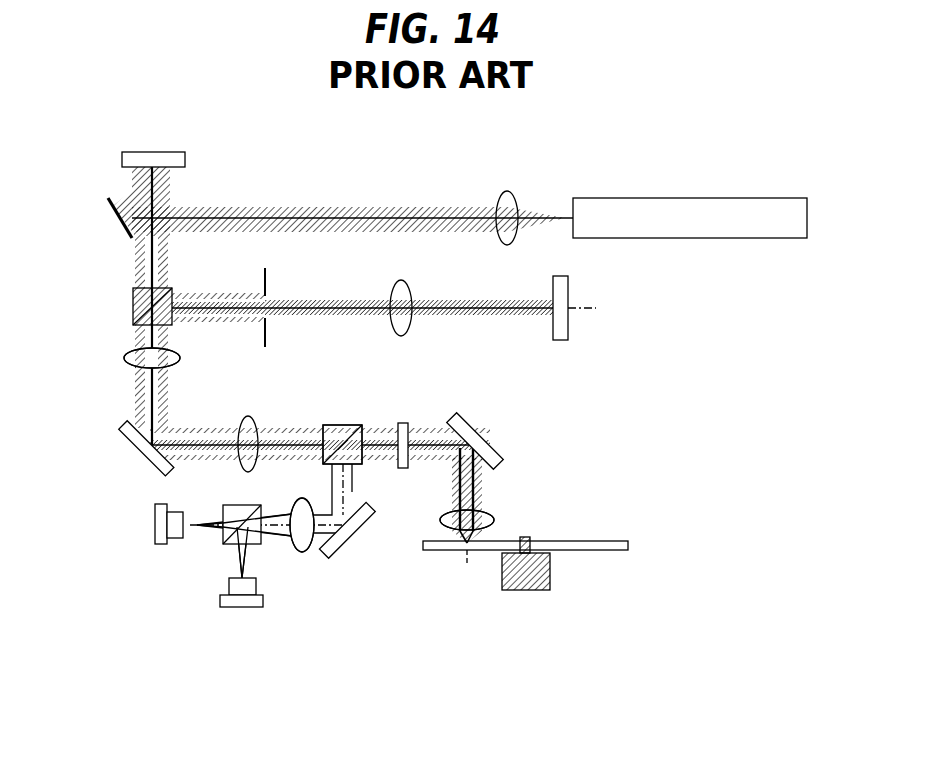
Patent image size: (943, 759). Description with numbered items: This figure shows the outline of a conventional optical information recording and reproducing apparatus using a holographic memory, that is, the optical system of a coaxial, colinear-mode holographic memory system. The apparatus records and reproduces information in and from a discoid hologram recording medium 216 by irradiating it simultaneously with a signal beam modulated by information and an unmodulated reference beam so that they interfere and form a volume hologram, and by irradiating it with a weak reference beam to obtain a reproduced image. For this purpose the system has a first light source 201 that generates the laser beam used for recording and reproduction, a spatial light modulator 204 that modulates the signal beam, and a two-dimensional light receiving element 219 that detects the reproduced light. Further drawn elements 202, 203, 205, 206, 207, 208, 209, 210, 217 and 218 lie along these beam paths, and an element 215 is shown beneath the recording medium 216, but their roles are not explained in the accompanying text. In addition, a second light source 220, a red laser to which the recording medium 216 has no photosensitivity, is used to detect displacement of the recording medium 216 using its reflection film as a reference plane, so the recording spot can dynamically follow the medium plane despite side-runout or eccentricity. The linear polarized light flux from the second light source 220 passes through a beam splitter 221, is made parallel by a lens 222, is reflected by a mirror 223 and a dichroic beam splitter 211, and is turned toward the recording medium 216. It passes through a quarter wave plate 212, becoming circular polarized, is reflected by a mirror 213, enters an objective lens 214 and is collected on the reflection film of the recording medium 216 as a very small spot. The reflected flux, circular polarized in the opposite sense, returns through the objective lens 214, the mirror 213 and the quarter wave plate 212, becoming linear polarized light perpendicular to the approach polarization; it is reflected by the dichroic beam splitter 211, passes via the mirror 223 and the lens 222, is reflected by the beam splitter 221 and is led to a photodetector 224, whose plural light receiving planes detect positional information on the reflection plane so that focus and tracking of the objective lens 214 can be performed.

The first light source 201 is at (743, 198).
The collimator lens 202 is at (507, 191).
The mirror 203 is at (110, 217).
The spatial light modulator 204 is at (122, 156).
The first light beam 205 is at (168, 248).
The second light beam 206 is at (137, 248).
The beam splitter 207 is at (133, 305).
The lens 208 is at (125, 358).
The mirror 209 is at (125, 443).
The lens 210 is at (248, 418).
The dichroic beam splitter 211 is at (345, 425).
The quarter wave plate 212 is at (402, 470).
The mirror 213 is at (490, 428).
The objective lens 214 is at (494, 516).
The actuator 215 is at (518, 592).
The hologram recording medium 216 is at (610, 551).
The aperture 217 is at (266, 333).
The lens 218 is at (412, 288).
The two-dimensional light receiving element 219 is at (570, 284).
The second light source 220 is at (155, 523).
The beam splitter 221 is at (235, 504).
The lens 222 is at (302, 556).
The mirror 223 is at (348, 543).
The photodetector 224 is at (223, 597).